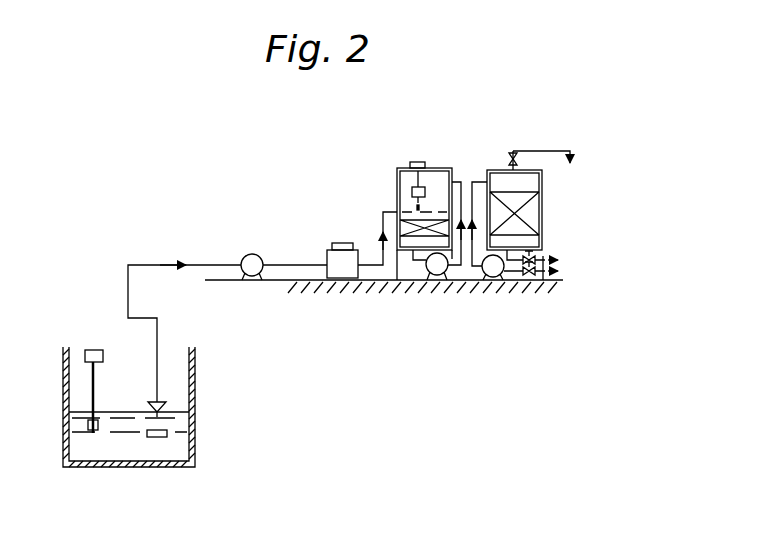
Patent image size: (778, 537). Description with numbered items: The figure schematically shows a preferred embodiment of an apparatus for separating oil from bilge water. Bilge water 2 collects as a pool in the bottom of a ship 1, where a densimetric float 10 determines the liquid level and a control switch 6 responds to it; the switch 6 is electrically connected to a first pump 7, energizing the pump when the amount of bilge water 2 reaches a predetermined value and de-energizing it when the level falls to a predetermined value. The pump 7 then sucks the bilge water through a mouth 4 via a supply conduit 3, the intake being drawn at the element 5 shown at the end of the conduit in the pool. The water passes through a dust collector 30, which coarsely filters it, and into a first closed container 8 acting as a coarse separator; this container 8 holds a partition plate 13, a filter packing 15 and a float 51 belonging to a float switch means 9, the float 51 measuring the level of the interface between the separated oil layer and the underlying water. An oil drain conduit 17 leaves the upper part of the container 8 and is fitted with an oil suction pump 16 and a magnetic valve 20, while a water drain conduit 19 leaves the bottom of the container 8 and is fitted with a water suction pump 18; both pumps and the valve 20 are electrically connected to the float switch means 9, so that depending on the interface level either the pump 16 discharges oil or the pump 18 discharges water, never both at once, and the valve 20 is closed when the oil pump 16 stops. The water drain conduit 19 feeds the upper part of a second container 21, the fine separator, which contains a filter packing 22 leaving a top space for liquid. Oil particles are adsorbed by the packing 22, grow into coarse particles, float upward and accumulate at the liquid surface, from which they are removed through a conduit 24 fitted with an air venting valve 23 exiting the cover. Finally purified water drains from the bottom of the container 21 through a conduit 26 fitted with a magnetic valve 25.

The ship 1 is at (190, 437).
The bilge water 2 is at (170, 412).
The supply conduit 3 is at (157, 324).
The mouth 4 is at (158, 437).
The funnel 5 is at (152, 403).
The control switch 6 is at (93, 350).
The first pump 7 is at (248, 254).
The first closed container 8 is at (445, 166).
The float switch means 9 is at (421, 160).
The densimetric float 10 is at (92, 432).
The partition plate 13 is at (430, 204).
The filter packing 15 is at (425, 233).
The oil suction pump 16 is at (496, 278).
The oil drain conduit 17 is at (461, 192).
The water suction pump 18 is at (442, 278).
The water drain conduit 19 is at (462, 283).
The magnetic valve 20 is at (541, 283).
The second container 21 is at (492, 172).
The filter packing 22 is at (536, 198).
The air venting valve 23 is at (518, 157).
The conduit 24 is at (578, 156).
The magnetic valve 25 is at (540, 256).
The conduit 26 is at (548, 262).
The dust collector 30 is at (328, 249).
The float 51 is at (411, 194).